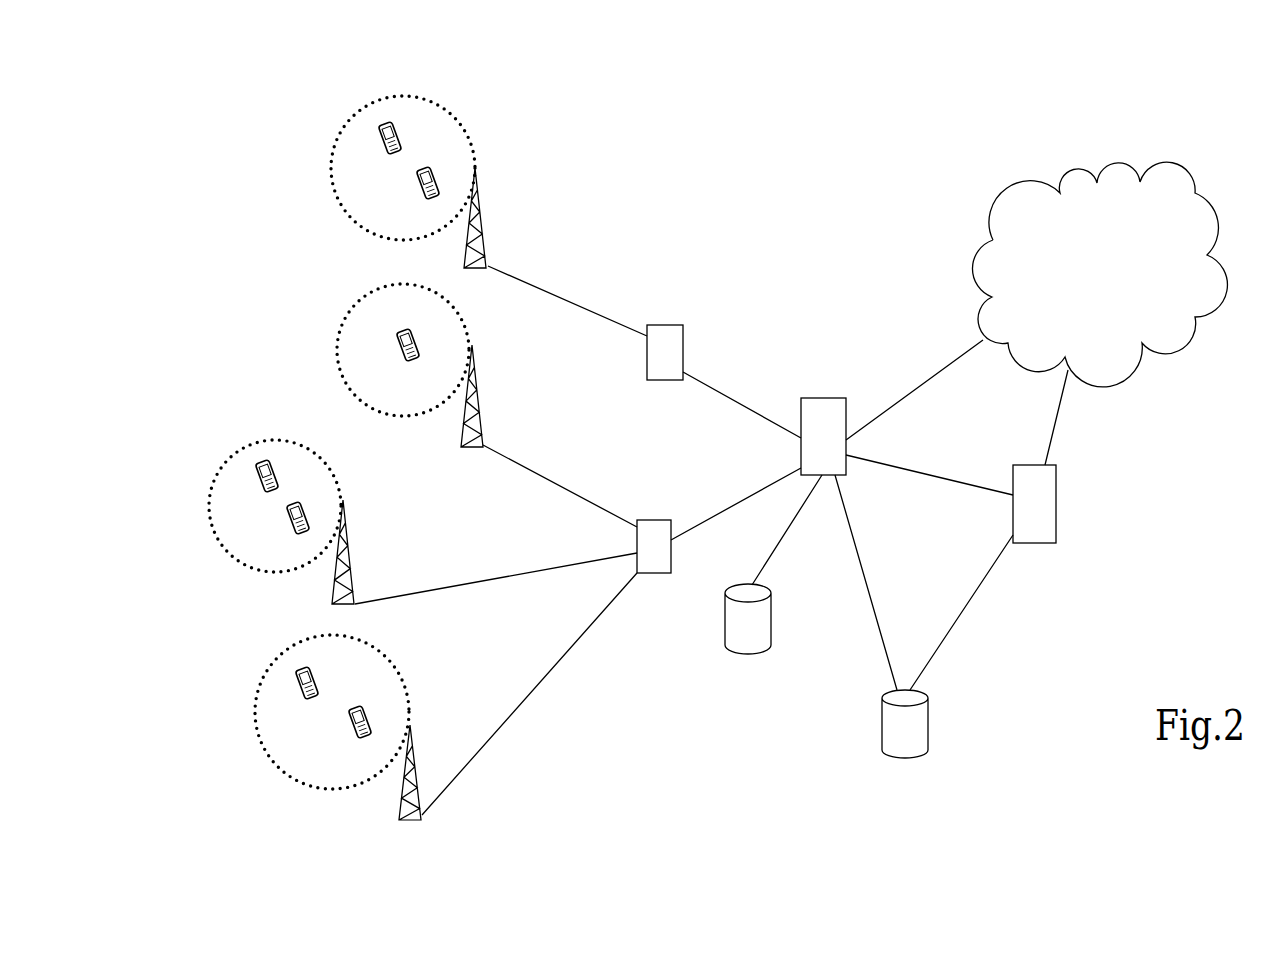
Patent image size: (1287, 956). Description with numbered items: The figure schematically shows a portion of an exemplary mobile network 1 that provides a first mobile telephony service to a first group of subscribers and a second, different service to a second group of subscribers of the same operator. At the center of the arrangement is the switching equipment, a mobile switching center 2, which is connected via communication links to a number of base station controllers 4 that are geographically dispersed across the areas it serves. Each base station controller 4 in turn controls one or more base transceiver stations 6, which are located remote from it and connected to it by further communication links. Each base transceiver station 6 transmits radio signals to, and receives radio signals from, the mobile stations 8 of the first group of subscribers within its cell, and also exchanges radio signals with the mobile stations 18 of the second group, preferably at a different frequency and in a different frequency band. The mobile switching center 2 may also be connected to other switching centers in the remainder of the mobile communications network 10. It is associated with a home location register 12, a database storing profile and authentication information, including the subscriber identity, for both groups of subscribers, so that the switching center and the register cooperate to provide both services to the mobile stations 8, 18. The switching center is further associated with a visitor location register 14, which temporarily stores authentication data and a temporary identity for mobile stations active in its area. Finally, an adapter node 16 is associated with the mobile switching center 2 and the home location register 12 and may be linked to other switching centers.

The mobile network 1 is at (823, 255).
The mobile switching center 2 is at (820, 398).
The base station controller 4 is at (663, 325).
The base transceiver station 6 is at (487, 233).
The mobile station of the first group 8 is at (420, 192).
The remainder of the mobile communications network 10 is at (1180, 350).
The home location register 12 is at (905, 755).
The visitor location register 14 is at (748, 647).
The adapter node 16 is at (1056, 512).
The mobile station of the second group 18 is at (397, 133).